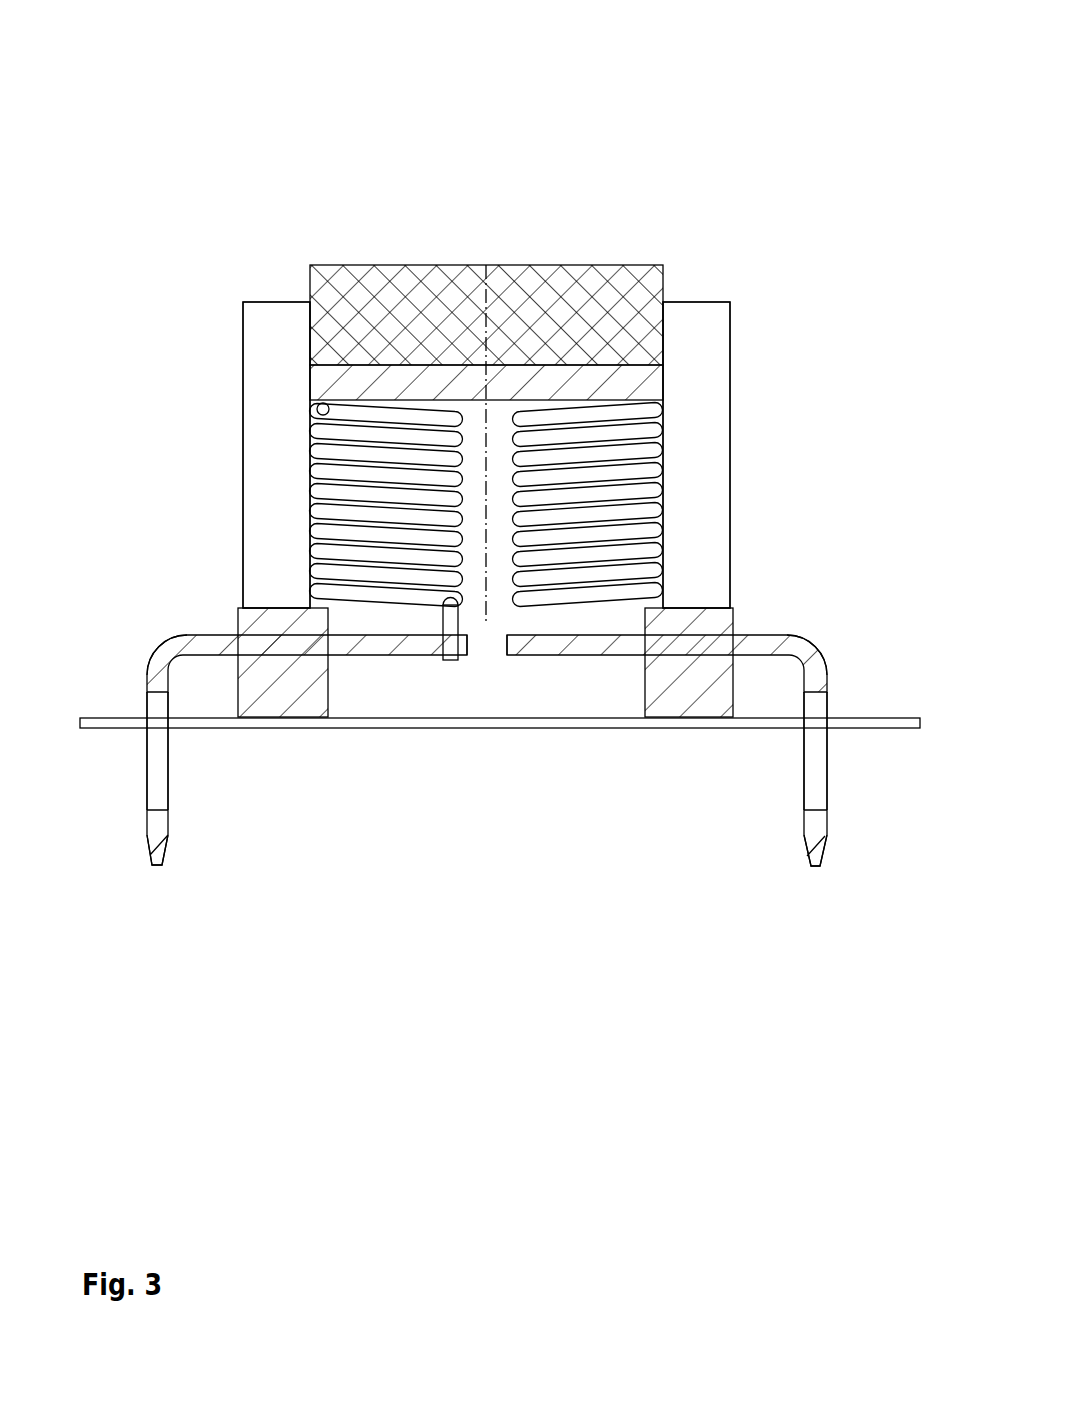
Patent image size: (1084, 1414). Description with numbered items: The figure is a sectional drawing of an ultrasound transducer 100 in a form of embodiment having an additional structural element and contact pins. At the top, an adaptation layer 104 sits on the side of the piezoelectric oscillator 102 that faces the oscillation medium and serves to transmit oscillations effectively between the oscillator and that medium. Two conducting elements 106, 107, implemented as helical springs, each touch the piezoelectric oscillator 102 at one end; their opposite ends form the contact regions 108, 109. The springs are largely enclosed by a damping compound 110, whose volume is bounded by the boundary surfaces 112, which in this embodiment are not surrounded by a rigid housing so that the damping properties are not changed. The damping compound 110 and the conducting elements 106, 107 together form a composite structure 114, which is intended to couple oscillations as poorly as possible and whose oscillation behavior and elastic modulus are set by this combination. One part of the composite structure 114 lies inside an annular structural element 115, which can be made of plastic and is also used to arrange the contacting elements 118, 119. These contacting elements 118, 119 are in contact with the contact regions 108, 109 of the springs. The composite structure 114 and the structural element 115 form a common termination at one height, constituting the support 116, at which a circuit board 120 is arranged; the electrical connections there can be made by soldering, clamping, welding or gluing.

The ultrasound transducer 100 is at (764, 104).
The piezoelectric oscillator 102 is at (318, 388).
The adaptation layer 104 is at (533, 277).
The conducting element 106 is at (322, 498).
The conducting element 107 is at (612, 552).
The contact region 108 is at (452, 643).
The contact region 109 is at (518, 642).
The damping compound 110 is at (693, 468).
The boundary surface 112 is at (243, 317).
The composite structure 114 is at (388, 615).
The structural element 115 is at (262, 705).
The support 116 is at (512, 710).
The contacting element 118 is at (167, 653).
The contacting element 119 is at (813, 658).
The circuit board 120 is at (187, 722).